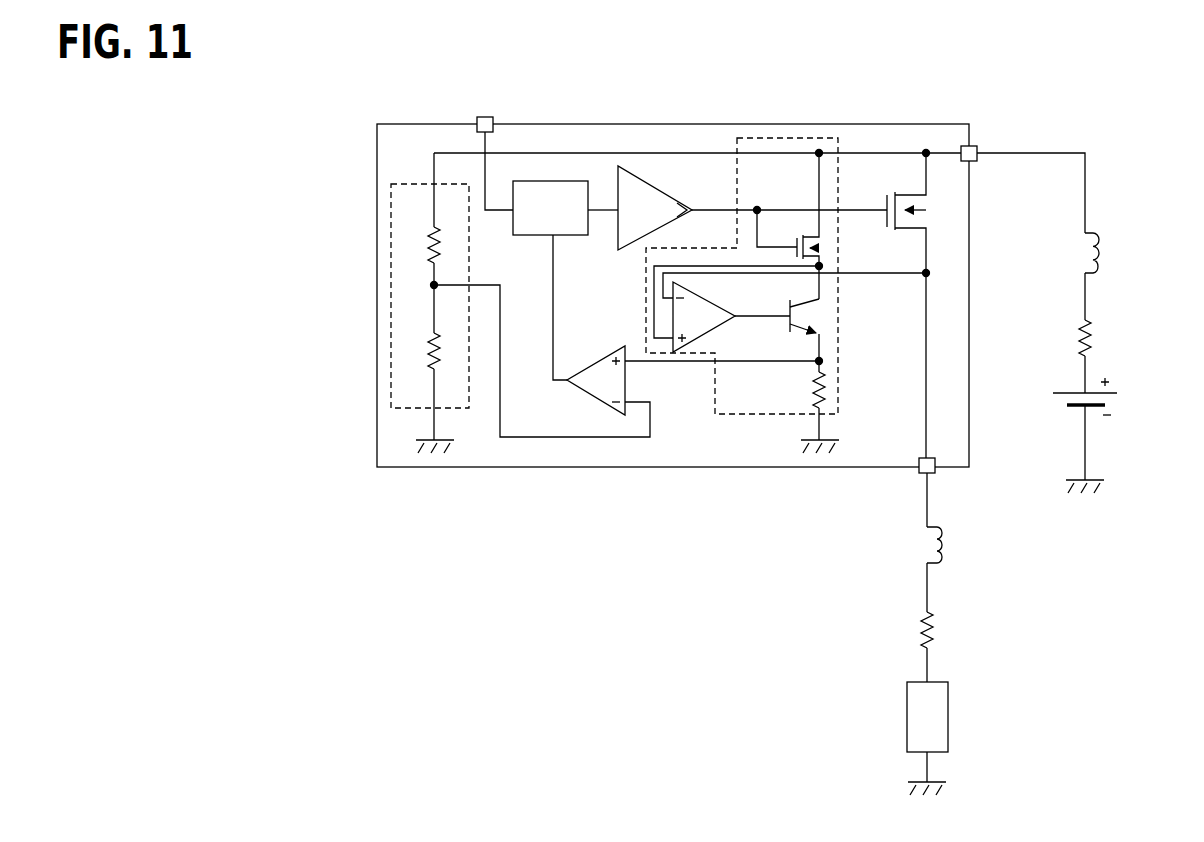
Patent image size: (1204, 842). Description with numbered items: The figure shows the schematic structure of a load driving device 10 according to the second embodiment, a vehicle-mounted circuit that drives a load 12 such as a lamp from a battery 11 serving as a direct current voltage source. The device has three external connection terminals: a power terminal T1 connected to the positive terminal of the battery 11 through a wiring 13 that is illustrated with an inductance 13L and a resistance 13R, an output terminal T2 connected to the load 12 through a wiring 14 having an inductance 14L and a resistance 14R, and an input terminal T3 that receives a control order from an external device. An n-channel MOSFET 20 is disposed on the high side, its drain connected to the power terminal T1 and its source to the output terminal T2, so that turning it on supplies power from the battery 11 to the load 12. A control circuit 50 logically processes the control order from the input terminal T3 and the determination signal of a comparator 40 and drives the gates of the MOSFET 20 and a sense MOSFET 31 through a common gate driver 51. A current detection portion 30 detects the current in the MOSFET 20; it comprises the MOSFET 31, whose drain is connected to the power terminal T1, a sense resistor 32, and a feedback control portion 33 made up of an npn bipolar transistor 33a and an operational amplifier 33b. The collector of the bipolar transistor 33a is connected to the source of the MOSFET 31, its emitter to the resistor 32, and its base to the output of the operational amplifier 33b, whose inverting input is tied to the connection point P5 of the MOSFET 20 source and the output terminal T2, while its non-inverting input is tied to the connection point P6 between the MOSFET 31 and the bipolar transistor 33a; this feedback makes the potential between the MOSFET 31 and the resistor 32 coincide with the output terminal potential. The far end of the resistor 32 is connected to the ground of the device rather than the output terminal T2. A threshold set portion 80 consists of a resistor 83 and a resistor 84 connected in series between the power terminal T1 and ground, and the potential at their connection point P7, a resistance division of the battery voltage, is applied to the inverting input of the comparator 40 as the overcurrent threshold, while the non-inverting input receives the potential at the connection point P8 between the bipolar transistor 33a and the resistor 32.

The load driving device 10 is at (935, 124).
The battery 11 is at (1117, 393).
The load 12 is at (948, 716).
The wiring 13 is at (1052, 153).
The inductance 13L is at (1102, 246).
The resistance 13R is at (1094, 332).
The wiring 14 is at (927, 583).
The inductance 14L is at (946, 543).
The resistance 14R is at (938, 628).
The MOSFET 20 is at (927, 216).
The current detection portion 30 is at (815, 138).
The MOSFET 31 is at (822, 248).
The resistor 32 is at (823, 386).
The feedback control portion 33 is at (781, 354).
The bipolar transistor 33a is at (815, 331).
The operational amplifier 33b is at (712, 334).
The comparator 40 is at (603, 362).
The control circuit 50 is at (575, 181).
The gate driver 51 is at (645, 181).
The threshold set portion 80 is at (410, 184).
The resistor 83 is at (434, 246).
The resistor 84 is at (434, 353).
The power terminal T1 is at (977, 161).
The output terminal T2 is at (918, 472).
The input terminal T3 is at (485, 117).
The connection point P5 is at (928, 273).
The connection point P6 is at (840, 265).
The connection point P7 is at (434, 285).
The connection point P8 is at (823, 362).